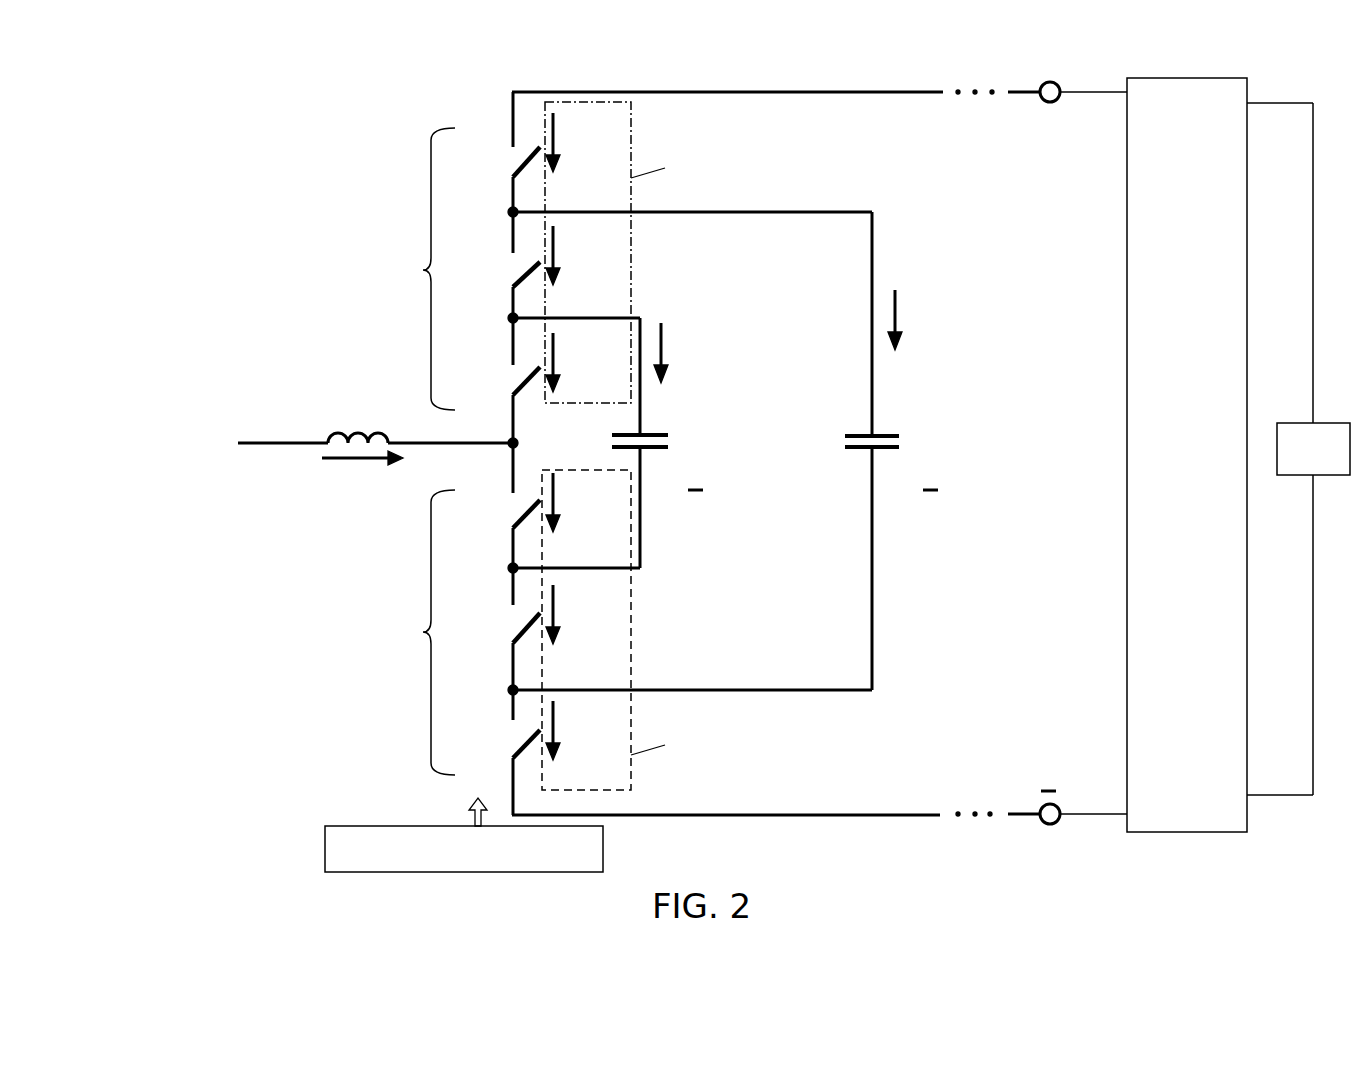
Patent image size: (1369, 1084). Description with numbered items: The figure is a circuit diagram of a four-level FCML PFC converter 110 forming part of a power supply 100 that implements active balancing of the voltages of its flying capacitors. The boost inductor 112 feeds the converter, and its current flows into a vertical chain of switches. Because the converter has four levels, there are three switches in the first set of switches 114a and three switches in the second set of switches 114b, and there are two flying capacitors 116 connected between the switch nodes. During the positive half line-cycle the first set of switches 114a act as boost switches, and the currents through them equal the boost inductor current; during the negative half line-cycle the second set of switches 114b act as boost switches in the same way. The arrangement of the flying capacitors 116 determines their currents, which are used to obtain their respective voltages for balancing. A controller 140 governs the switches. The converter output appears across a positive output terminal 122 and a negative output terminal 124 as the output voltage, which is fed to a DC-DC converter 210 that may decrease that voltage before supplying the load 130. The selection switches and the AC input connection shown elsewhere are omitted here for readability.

The power supply 100 is at (118, 168).
The 4-level FCML PFC converter 110 is at (262, 313).
The boost inductor 112 is at (320, 424).
The first set of switches 114a is at (423, 632).
The second set of switches 114b is at (423, 270).
The flying capacitors 116 is at (661, 477).
The positive output terminal 122 is at (1038, 106).
The negative output terminal 124 is at (1040, 805).
The load 130 is at (1313, 449).
The controller 140 is at (464, 835).
The DC-DC converter 210 is at (1187, 455).